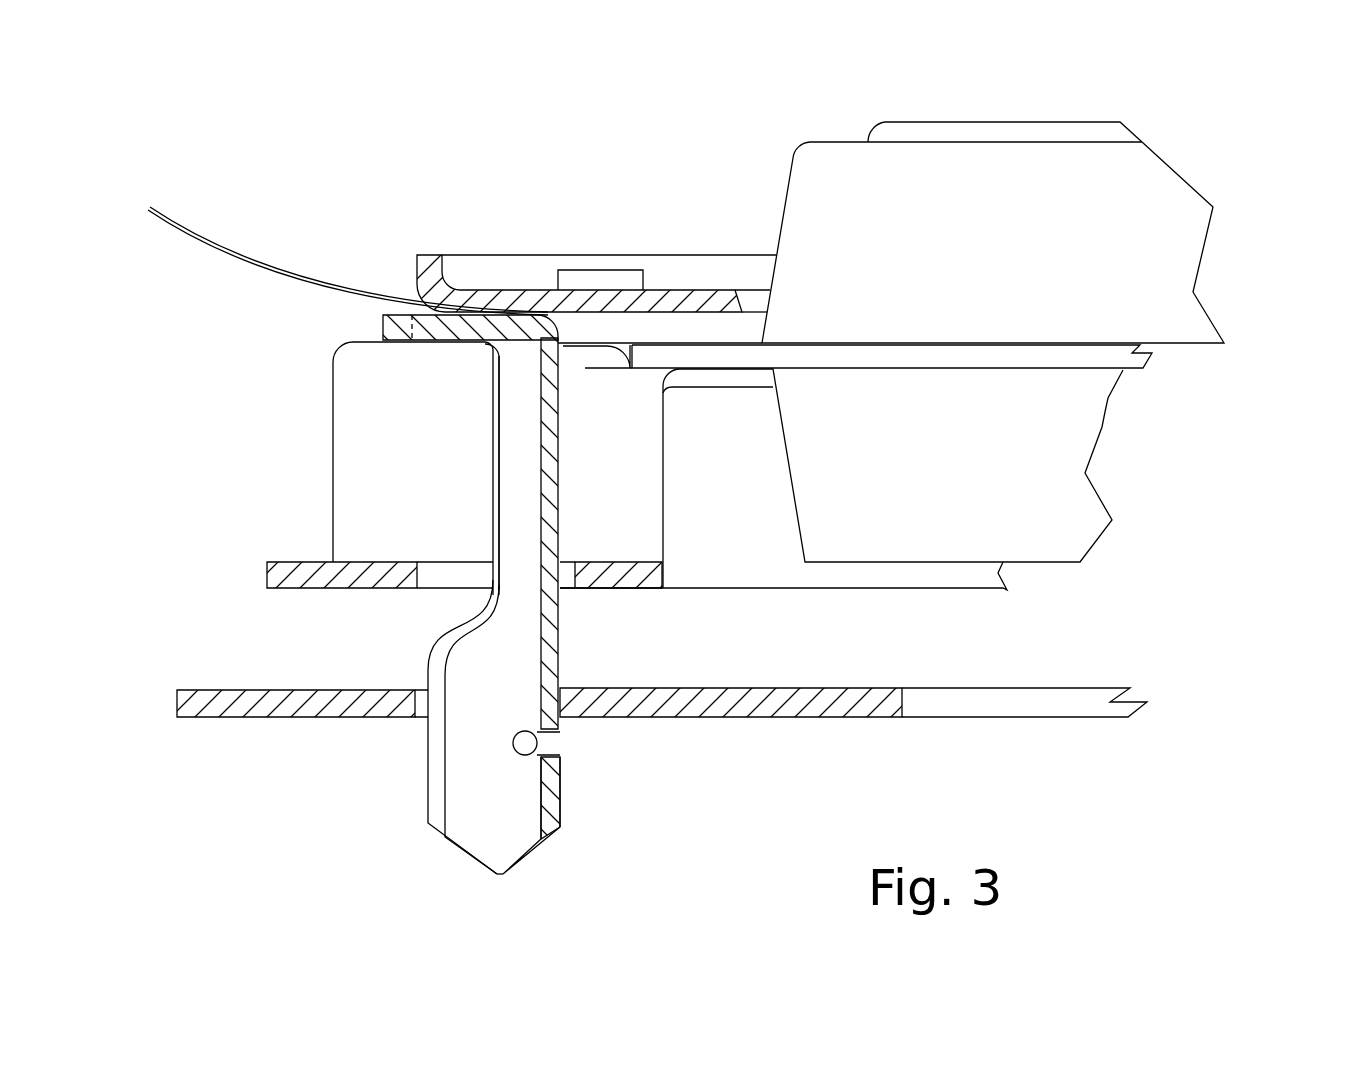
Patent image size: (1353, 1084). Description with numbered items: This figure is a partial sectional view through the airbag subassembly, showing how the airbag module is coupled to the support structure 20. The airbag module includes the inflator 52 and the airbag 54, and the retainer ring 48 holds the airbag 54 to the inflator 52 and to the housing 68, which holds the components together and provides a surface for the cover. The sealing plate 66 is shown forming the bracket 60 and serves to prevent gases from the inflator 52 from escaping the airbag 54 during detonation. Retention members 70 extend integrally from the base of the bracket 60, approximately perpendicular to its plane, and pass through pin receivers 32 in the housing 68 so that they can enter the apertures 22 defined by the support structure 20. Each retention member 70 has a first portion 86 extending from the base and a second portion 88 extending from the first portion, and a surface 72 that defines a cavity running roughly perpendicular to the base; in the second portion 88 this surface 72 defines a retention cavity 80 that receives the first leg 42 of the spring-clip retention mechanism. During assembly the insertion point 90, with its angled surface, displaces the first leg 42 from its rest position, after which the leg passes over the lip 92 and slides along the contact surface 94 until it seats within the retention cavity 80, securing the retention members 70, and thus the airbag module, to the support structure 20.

The support structure 20 is at (883, 703).
The apertures 22 is at (423, 697).
The pin receivers 32 is at (428, 580).
The first leg 42 is at (532, 742).
The retainer ring 48 is at (442, 287).
The inflator 52 is at (1177, 210).
The airbag 54 is at (235, 255).
The bracket 60 is at (387, 317).
The sealing plate 66 is at (723, 327).
The housing 68 is at (282, 573).
The retention members 70 is at (553, 653).
The surface 72 is at (522, 497).
The retention cavity 80 is at (555, 752).
The first portion 86 is at (519, 415).
The second portion 88 is at (562, 790).
The insertion point 90 is at (503, 877).
The lip 92 is at (565, 828).
The contact surface 94 is at (560, 773).